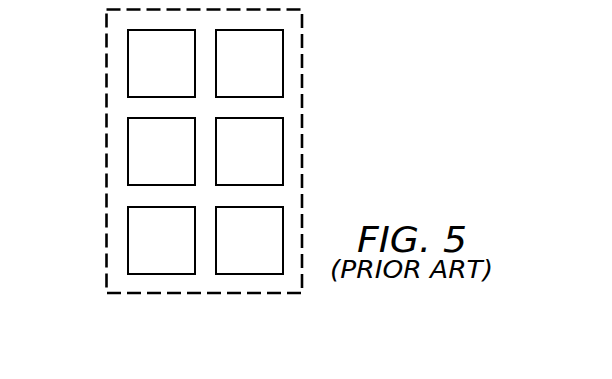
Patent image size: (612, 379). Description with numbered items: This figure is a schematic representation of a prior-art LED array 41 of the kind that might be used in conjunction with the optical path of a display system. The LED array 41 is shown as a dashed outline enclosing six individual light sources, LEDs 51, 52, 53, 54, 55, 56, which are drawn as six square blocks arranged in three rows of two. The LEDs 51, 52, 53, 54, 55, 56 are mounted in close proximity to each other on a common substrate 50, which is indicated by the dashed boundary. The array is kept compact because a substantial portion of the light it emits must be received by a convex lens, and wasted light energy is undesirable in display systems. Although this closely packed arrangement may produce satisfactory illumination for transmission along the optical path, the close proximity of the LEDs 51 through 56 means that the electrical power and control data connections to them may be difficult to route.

The substrate 50 is at (121, 124).
The LED array 41 is at (368, 86).
The LED 51 is at (174, 75).
The LED 52 is at (262, 75).
The LED 53 is at (174, 163).
The LED 54 is at (262, 163).
The LED 55 is at (174, 252).
The LED 56 is at (262, 252).